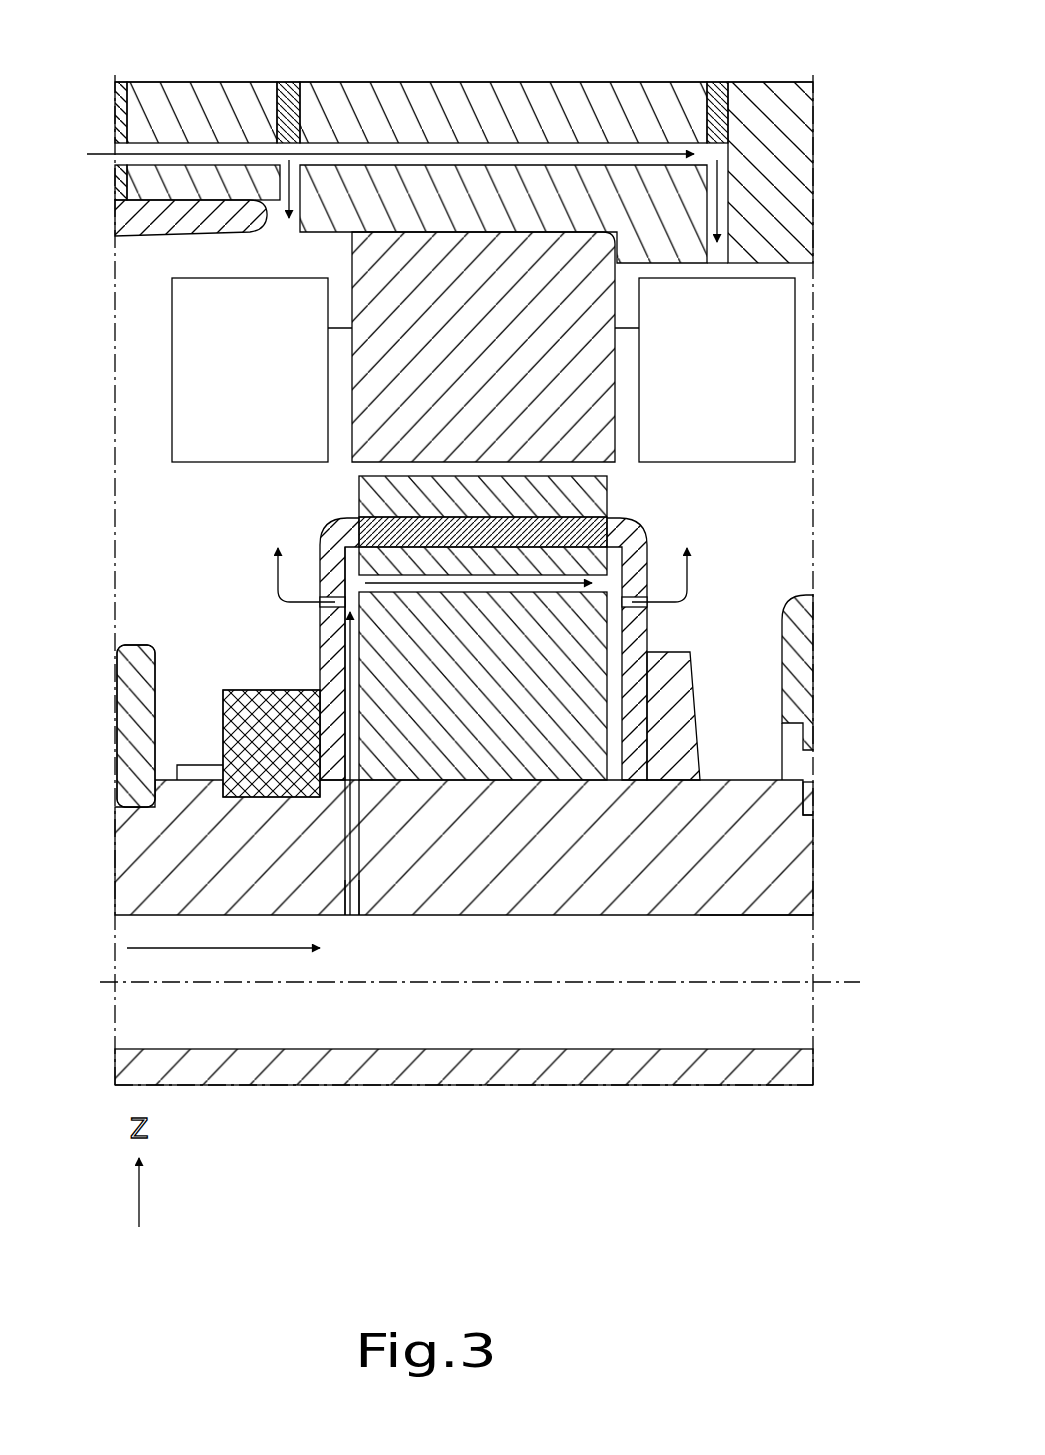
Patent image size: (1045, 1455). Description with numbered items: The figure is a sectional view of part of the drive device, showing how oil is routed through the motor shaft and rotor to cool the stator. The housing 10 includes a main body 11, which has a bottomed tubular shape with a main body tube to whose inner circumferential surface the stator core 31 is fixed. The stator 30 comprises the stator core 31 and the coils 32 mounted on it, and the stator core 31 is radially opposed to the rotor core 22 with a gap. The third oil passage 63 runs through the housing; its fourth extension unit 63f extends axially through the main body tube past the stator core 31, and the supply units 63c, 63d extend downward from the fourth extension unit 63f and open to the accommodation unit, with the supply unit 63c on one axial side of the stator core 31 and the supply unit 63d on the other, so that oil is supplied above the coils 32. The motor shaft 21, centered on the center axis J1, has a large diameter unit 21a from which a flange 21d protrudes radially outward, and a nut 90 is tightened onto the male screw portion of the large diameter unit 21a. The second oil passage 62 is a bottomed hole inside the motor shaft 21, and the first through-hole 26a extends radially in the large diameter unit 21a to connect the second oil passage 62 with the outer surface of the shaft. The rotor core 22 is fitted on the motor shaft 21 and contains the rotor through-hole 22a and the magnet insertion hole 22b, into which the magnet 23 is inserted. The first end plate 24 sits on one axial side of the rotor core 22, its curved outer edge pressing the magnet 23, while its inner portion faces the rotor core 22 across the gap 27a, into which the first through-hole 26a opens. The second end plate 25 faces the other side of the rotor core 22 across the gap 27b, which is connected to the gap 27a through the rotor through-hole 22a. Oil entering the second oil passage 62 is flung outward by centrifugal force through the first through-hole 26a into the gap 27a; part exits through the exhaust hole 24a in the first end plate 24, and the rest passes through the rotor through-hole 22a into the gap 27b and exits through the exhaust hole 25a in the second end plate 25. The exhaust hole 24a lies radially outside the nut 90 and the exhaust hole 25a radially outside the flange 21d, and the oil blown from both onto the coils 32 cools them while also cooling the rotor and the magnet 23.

The housing 10 is at (848, 78).
The main body 11 is at (763, 74).
The third oil passage 63 is at (192, 132).
The fourth extension unit 63f is at (338, 148).
The supply unit 63c is at (278, 183).
The supply unit 63d is at (736, 192).
The stator 30 is at (838, 386).
The stator core 31 is at (552, 280).
The coil 32 is at (760, 333).
The magnet insertion hole 22b is at (642, 478).
The magnet 23 is at (525, 530).
The rotor through-hole 22a is at (598, 560).
The rotor core 22 is at (567, 753).
The first end plate 24 is at (333, 666).
The exhaust hole 24a is at (340, 602).
The second end plate 25 is at (637, 633).
The exhaust hole 25a is at (633, 602).
The gap 27a is at (340, 557).
The gap 27b is at (625, 672).
The motor shaft 21 is at (836, 821).
The large diameter unit 21a is at (777, 880).
The flange 21d is at (670, 710).
The nut 90 is at (245, 737).
The first through-hole 26a is at (352, 885).
The center axis J1 is at (840, 980).
The second oil passage 62 is at (603, 1043).